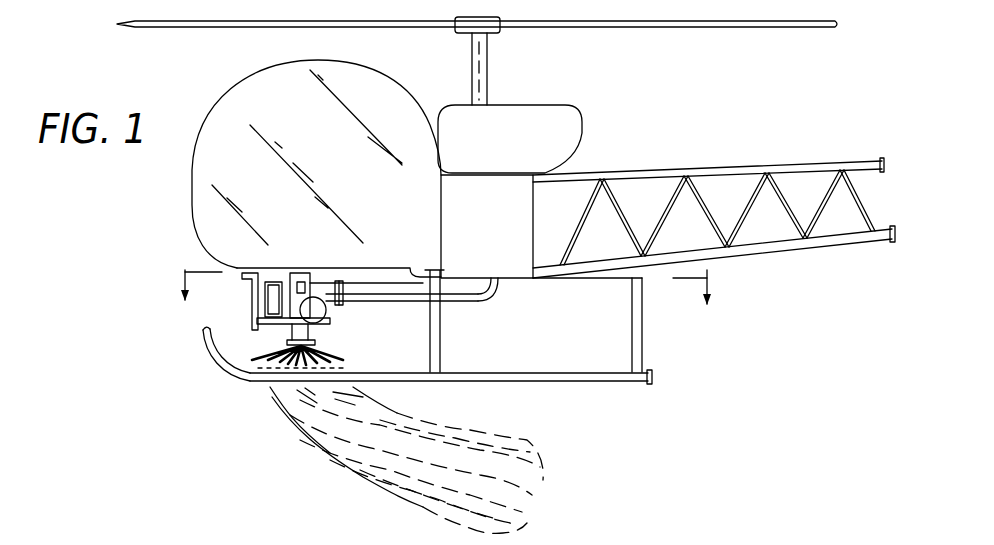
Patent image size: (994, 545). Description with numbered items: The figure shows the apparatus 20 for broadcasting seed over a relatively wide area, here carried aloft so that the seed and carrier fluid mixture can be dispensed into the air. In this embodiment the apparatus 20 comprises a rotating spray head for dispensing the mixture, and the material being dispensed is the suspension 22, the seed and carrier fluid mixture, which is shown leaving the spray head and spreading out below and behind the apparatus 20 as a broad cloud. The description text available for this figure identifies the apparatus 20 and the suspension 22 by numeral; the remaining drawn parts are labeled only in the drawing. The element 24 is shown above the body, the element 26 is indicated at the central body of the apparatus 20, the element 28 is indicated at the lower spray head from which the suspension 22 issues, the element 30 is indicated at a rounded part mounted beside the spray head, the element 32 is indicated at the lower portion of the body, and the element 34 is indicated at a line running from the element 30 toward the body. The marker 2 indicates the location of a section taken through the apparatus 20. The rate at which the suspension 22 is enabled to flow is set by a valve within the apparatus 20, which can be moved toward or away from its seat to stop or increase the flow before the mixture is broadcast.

The section line 2- 2 is at (447, 306).
The apparatus 20 is at (408, 330).
The suspension 22 is at (367, 434).
The rotor blade 24 is at (566, 30).
The fuselage body 26 is at (476, 195).
The spray nozzle 28 is at (278, 366).
The pump 30 is at (328, 309).
The supply tank 32 is at (459, 291).
The conduit 34 is at (488, 298).